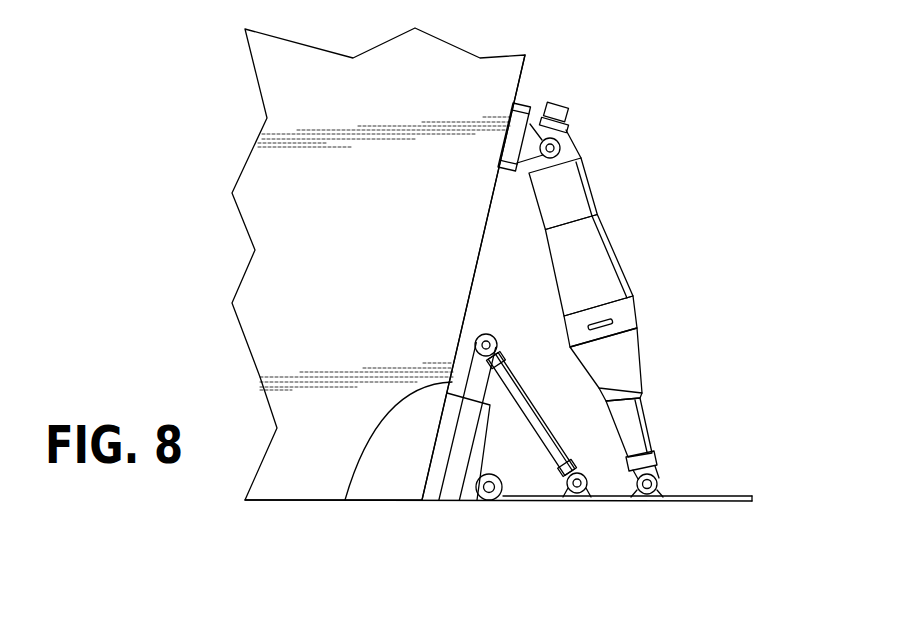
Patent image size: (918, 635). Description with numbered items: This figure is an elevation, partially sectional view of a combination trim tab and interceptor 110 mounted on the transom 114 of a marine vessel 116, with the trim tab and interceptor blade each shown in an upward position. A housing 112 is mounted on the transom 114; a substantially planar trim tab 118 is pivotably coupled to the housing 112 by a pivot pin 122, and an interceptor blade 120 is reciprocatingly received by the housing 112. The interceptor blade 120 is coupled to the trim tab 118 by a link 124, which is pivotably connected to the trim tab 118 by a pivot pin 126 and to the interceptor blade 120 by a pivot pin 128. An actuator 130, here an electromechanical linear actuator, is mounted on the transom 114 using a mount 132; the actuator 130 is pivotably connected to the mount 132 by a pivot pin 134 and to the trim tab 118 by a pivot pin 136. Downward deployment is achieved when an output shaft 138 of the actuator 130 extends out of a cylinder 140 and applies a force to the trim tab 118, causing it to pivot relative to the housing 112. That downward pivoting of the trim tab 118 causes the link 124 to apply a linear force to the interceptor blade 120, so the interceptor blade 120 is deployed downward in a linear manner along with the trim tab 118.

The combination trim tab and interceptor 110 is at (712, 158).
The housing 112 is at (427, 466).
The transom 114 is at (527, 63).
The marine vessel 116 is at (228, 136).
The trim tab 118 is at (712, 496).
The interceptor blade 120 is at (345, 500).
The pivot pin 122 is at (487, 500).
The link 124 is at (533, 417).
The pivot pin 126 is at (578, 502).
The pivot pin 128 is at (491, 334).
The actuator 130 is at (623, 268).
The mount 132 is at (521, 100).
The pivot pin 134 is at (562, 147).
The pivot pin 136 is at (648, 500).
The output shaft 138 is at (651, 434).
The cylinder 140 is at (597, 201).